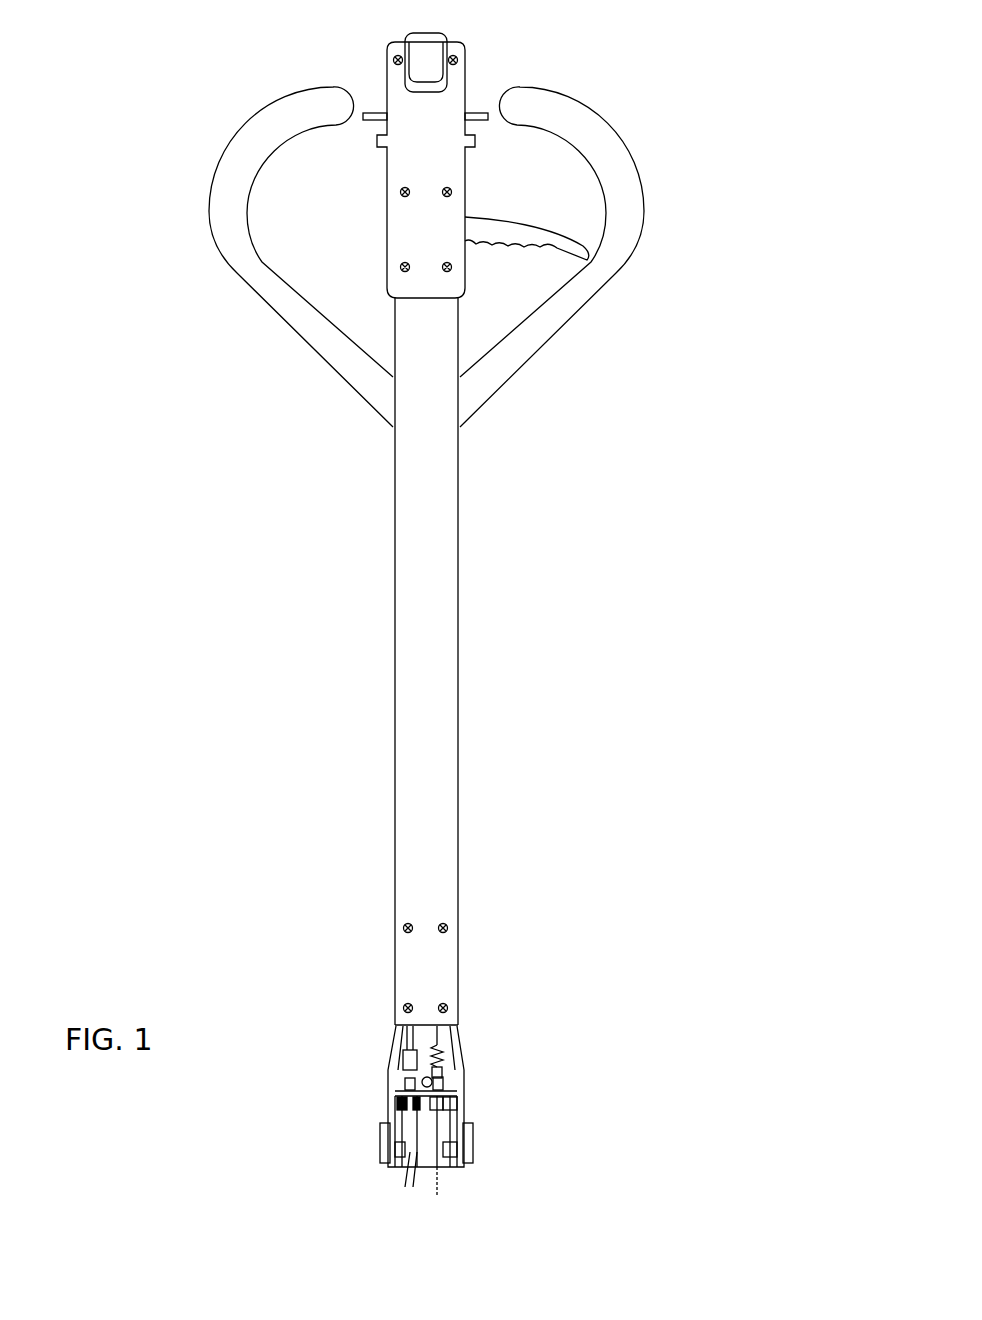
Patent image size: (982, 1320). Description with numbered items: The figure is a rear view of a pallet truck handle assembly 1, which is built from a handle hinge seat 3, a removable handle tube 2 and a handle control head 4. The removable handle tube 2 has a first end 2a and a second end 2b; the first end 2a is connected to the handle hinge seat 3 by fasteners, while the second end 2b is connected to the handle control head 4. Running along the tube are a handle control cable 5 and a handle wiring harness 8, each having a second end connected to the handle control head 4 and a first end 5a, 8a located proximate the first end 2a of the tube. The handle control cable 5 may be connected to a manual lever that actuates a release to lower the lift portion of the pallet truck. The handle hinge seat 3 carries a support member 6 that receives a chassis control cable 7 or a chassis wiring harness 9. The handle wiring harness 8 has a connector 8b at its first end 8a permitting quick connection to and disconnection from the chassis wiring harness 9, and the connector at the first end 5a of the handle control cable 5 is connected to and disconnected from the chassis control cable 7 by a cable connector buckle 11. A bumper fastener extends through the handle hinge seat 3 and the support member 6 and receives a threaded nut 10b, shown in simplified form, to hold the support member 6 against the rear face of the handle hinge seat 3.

The pallet truck handle assembly 1 is at (772, 132).
The removable handle tube 2 is at (458, 668).
The first end of removable handle tube 2a is at (437, 983).
The second end of removable handle tube 2b is at (438, 325).
The handle hinge seat 3 is at (467, 1108).
The handle control head 4 is at (468, 163).
The handle control cable 5 is at (440, 1037).
The first end of handle control cable 5a is at (438, 1053).
The support member 6 is at (396, 1093).
The chassis control cable 7 is at (444, 1159).
The handle wiring harness 8 is at (410, 1042).
The first end of handle wiring harness 8a is at (412, 1058).
The connector 8b is at (404, 1074).
The chassis wiring harness 9 is at (413, 1150).
The threaded nut 10b is at (402, 1100).
The cable connector buckle 11 is at (440, 1062).